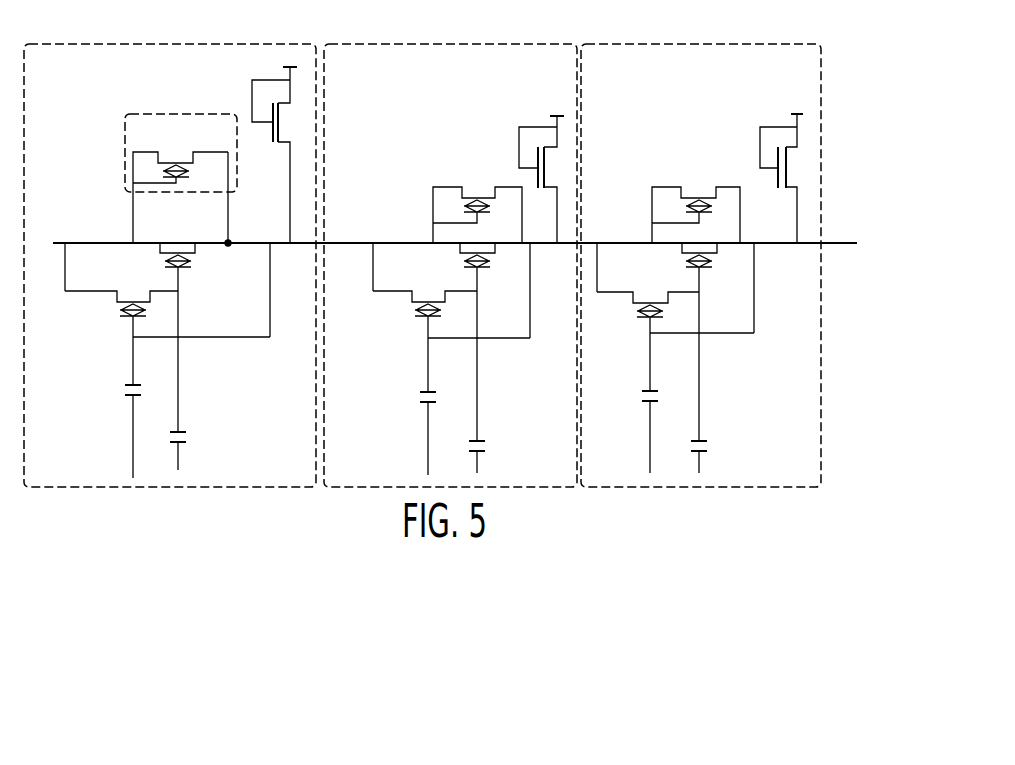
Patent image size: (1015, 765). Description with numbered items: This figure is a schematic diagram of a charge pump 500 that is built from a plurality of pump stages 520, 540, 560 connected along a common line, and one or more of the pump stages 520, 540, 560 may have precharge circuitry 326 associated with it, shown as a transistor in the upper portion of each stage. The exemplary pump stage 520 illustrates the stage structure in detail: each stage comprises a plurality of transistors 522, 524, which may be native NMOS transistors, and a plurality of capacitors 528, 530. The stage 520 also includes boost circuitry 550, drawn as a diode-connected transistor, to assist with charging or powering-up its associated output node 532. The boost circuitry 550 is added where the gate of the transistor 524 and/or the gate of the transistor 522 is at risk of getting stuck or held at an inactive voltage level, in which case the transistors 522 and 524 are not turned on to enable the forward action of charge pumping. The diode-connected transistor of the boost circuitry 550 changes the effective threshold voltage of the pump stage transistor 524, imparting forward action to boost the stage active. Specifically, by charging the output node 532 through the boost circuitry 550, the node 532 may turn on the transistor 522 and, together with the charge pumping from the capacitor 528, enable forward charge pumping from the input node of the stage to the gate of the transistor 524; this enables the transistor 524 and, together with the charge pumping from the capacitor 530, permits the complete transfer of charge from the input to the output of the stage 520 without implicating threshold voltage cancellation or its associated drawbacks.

The charge pump 500 is at (507, 265).
The pump stage 520 is at (100, 84).
The pump stage 540 is at (384, 78).
The pump stage 560 is at (634, 78).
The boost circuitry 550 is at (200, 143).
The precharge circuitry 326 is at (236, 88).
The transistor 524 is at (177, 252).
The transistor 522 is at (126, 301).
The output node 532 is at (226, 215).
The capacitor 528 is at (127, 393).
The capacitor 530 is at (188, 443).